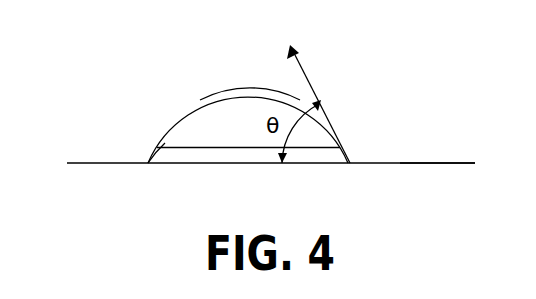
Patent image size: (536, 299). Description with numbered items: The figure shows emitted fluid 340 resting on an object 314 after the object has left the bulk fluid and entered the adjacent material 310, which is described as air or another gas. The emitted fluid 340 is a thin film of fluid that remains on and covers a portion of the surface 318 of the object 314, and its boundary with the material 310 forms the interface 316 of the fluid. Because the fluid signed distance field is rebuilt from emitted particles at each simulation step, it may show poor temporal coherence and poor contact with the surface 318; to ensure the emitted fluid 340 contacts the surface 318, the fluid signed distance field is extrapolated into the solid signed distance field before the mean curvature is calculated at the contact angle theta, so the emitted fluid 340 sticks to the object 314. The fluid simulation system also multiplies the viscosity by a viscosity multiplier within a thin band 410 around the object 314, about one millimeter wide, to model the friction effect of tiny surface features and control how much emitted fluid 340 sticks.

The material 310 is at (410, 50).
The object 314 is at (417, 206).
The interface 316 is at (223, 100).
The surface 318 is at (420, 163).
The emitted fluid 340 is at (241, 138).
The thin band 410 is at (155, 157).